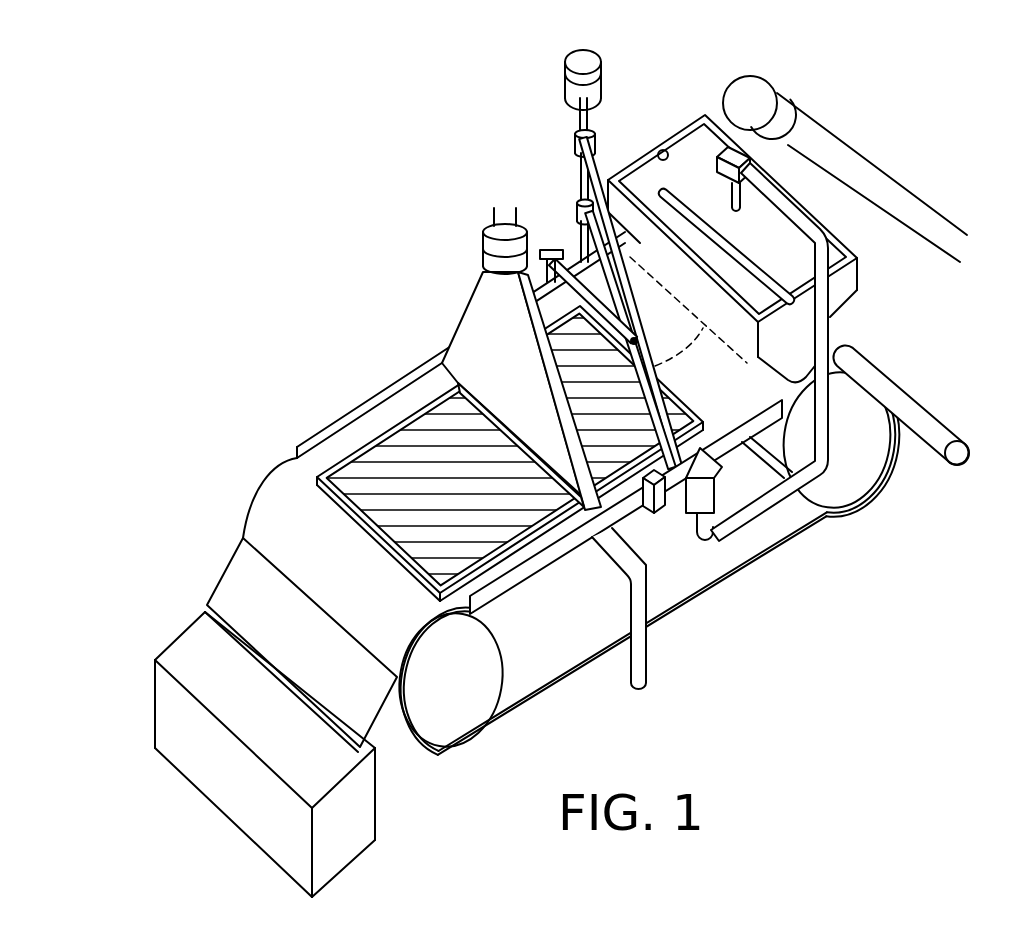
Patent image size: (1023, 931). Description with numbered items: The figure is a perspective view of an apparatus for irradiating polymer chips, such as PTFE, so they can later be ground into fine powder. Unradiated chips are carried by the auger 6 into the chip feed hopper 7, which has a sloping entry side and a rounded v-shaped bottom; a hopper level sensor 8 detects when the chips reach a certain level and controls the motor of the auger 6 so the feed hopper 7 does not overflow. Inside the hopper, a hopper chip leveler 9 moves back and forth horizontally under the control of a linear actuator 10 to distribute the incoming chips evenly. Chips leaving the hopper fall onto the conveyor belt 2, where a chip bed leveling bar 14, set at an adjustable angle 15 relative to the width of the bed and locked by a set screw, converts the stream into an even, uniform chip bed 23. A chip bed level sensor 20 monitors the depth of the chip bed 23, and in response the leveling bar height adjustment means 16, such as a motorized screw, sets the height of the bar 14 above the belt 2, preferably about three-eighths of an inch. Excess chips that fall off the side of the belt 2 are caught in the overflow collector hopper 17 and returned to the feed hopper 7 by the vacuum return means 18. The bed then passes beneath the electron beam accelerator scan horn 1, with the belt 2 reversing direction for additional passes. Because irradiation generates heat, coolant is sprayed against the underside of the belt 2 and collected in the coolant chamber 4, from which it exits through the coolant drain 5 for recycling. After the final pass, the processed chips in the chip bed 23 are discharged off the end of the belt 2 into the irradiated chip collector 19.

The electron beam accelerator scan horn 1 is at (513, 374).
The conveyor belt 2 is at (330, 579).
The coolant chamber 4 is at (513, 578).
The coolant drain 5 is at (648, 663).
The auger 6 is at (874, 190).
The chip feed hopper 7 is at (786, 266).
The hopper level sensor 8 is at (664, 150).
The hopper chip leveler 9 is at (812, 217).
The linear actuator 10 is at (915, 413).
The chip bed leveling bar 14 is at (578, 262).
The adjustable angle 15 is at (688, 323).
The leveling bar height adjustment means 16 is at (573, 62).
The overflow collector hopper 17 is at (708, 540).
The vacuum return means 18 is at (733, 150).
The irradiated chip collector 19 is at (224, 766).
The chip bed level sensor 20 is at (656, 495).
The chip bed 23 is at (432, 490).